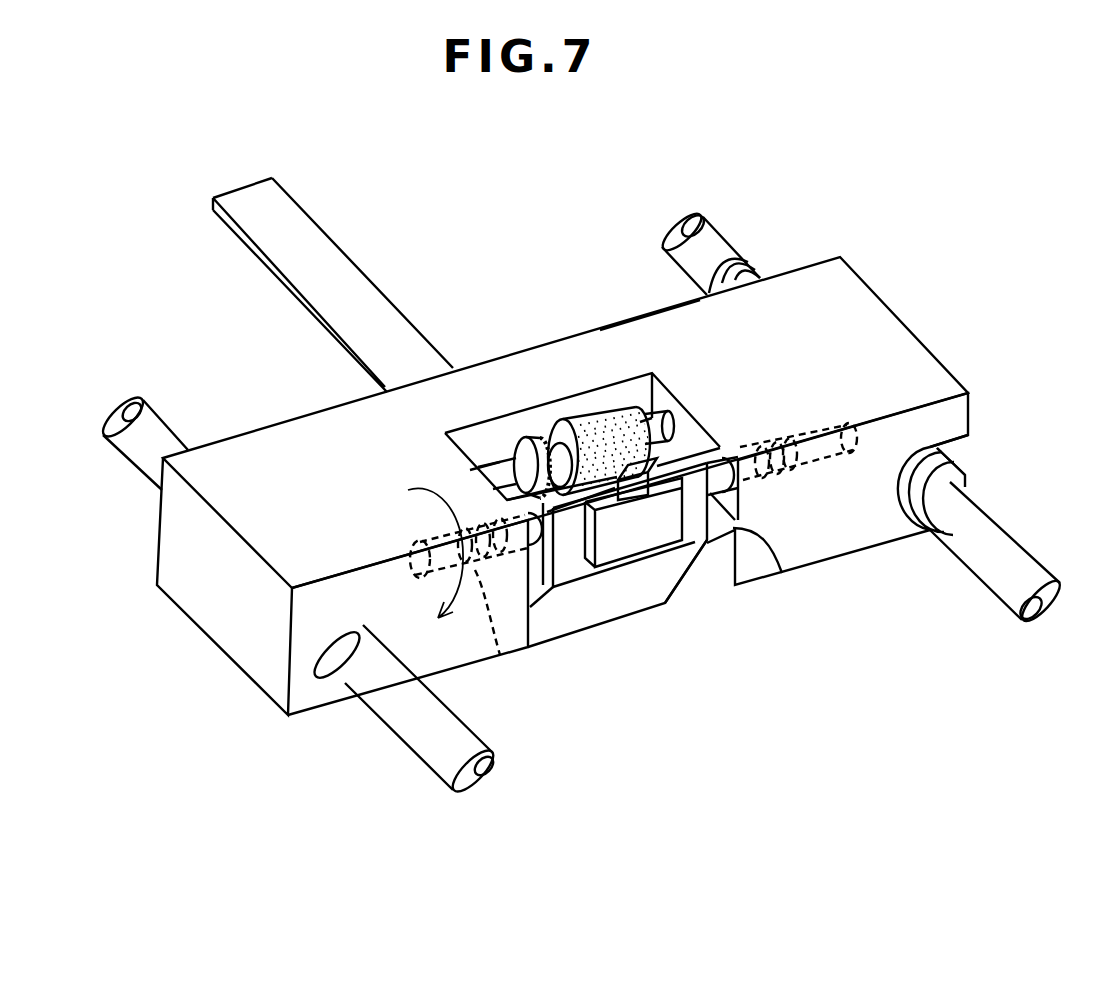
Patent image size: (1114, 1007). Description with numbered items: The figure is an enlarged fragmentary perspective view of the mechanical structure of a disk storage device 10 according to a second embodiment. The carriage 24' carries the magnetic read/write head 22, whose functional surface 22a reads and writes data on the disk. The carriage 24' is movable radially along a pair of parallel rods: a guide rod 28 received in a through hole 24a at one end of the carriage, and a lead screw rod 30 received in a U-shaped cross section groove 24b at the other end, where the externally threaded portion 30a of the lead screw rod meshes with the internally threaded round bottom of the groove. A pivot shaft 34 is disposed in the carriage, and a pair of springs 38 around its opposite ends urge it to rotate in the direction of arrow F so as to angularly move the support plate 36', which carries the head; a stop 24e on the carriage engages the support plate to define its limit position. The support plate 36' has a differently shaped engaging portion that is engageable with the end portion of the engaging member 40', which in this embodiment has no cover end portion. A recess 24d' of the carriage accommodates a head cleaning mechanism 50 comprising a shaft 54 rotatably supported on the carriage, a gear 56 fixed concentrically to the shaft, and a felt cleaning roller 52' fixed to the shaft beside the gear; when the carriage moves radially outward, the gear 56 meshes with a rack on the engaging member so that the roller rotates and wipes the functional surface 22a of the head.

The data storage device 10 is at (591, 450).
The magnetic read/write head 22 is at (613, 567).
The functional surface 22a is at (592, 429).
The carriage 24' is at (596, 511).
The through hole 24a is at (328, 696).
The U-shaped cross section groove 24b is at (982, 432).
The recess 24d' is at (650, 323).
The stop 24e is at (818, 567).
The guide rod 28 is at (422, 724).
The lead screw rod 30 is at (591, 509).
The externally threaded portion 30a is at (730, 251).
The pivot shaft 34 is at (736, 445).
The support plate 36' is at (705, 588).
The springs 38 is at (633, 541).
The engaging member 40' is at (333, 285).
The head cleaning mechanism 50 is at (555, 355).
The cleaning roller 52' is at (599, 398).
The shaft 54 is at (555, 402).
The gear 56 is at (523, 405).